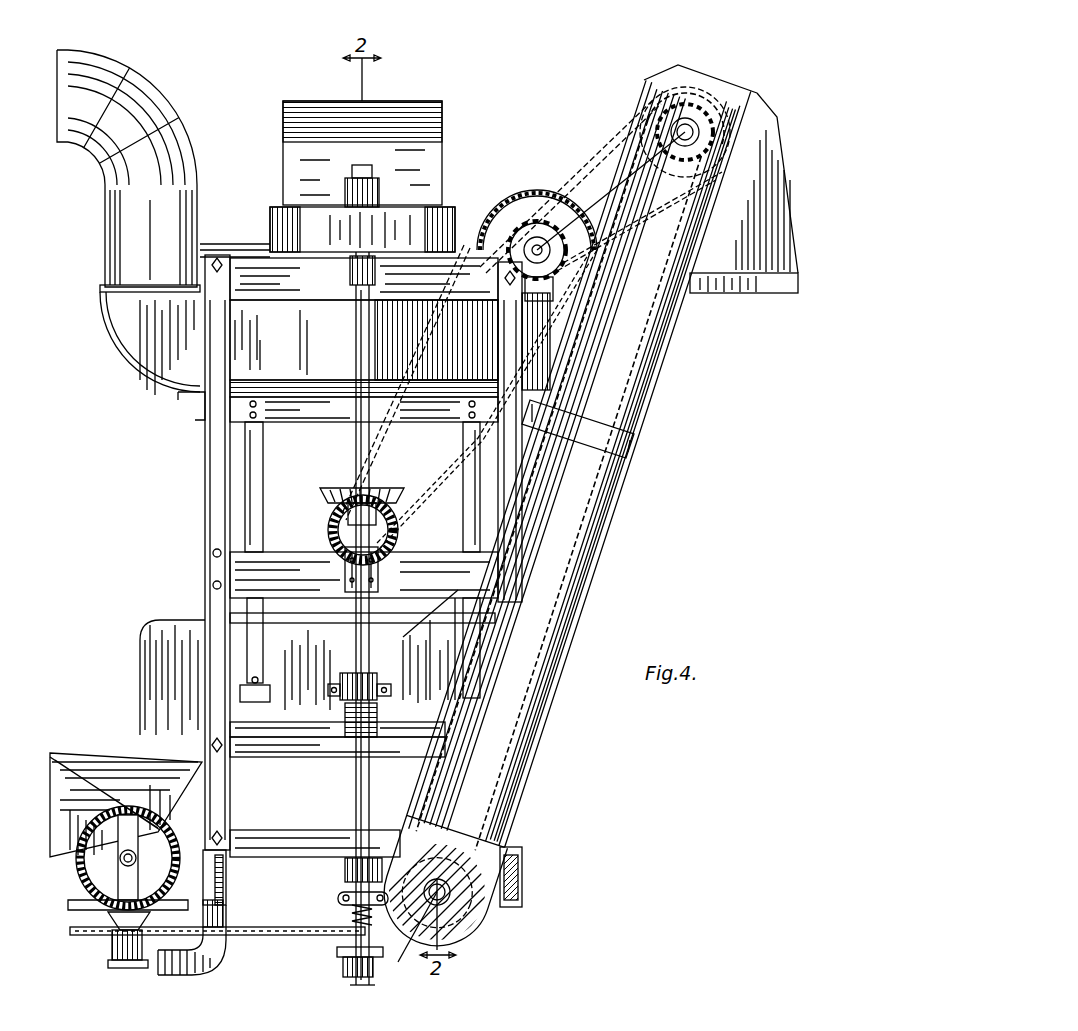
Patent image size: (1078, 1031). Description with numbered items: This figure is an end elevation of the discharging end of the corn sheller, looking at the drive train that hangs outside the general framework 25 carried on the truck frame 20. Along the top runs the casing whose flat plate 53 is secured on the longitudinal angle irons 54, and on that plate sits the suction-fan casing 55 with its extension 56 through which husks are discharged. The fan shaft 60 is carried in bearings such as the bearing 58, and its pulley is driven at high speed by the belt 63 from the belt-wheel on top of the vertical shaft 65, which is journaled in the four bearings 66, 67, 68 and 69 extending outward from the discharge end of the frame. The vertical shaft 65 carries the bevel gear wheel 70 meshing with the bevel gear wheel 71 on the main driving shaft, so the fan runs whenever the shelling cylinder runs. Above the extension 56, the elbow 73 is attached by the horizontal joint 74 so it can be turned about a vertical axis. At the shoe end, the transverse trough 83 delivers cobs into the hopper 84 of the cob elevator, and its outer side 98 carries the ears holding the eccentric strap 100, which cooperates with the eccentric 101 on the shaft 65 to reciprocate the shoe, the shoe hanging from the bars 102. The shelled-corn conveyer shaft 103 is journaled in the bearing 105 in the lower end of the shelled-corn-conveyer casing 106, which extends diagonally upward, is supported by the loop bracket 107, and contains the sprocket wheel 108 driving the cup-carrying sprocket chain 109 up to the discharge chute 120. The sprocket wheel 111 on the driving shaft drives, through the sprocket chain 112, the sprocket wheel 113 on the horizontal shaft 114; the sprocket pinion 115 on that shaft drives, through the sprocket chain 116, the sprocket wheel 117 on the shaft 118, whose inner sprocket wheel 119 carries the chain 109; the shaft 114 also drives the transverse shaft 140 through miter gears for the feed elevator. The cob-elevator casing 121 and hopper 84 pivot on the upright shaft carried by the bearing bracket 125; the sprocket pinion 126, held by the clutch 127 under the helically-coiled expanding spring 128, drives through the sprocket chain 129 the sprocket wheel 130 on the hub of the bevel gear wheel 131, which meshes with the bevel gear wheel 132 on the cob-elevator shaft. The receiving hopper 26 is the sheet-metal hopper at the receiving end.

The truck frame 20 is at (225, 895).
The general framework 25 is at (205, 482).
The receiving hopper 26 is at (431, 160).
The flat plate 53 is at (306, 420).
The longitudinal angle irons 54 is at (186, 405).
The suction-fan casing 55 is at (283, 305).
The extension 56 is at (140, 350).
The bearing 58 is at (379, 192).
The shaft 60 is at (352, 168).
The belt 63 is at (272, 210).
The vertical shaft 65 is at (370, 652).
The bearing 66 is at (377, 270).
The bearing 67 is at (378, 575).
The bearing 68 is at (378, 718).
The bearing 69 is at (345, 868).
The bevel gear wheel 70 is at (390, 482).
The bevel gear wheel 71 is at (395, 512).
The elbow 73 is at (175, 145).
The horizontal joint 74 is at (100, 288).
The transverse trough 83 is at (158, 698).
The hopper 84 is at (108, 765).
The outer side 98 is at (430, 640).
The eccentric strap 100 is at (380, 680).
The eccentric 101 is at (340, 680).
The bars 102 is at (263, 520).
The shaft 103 is at (407, 938).
The bearing 105 is at (470, 915).
The shelled-corn-conveyer casing 106 is at (570, 600).
The loop bracket 107 is at (640, 446).
The sprocket wheel 108 is at (462, 925).
The sprocket chain 109 is at (523, 782).
The sprocket wheel 111 is at (335, 531).
The sprocket chain 112 is at (418, 355).
The sprocket wheel 113 is at (515, 210).
The horizontal shaft 114 is at (578, 230).
The sprocket pinion 115 is at (540, 222).
The sprocket chain 116 is at (598, 150).
The sprocket wheel 117 is at (645, 108).
The shaft 118 is at (682, 125).
The sprocket wheel 119 is at (722, 82).
The discharge chute 120 is at (756, 294).
The cob-elevator casing 121 is at (65, 762).
The bearing bracket 125 is at (180, 975).
The sprocket pinion 126 is at (350, 912).
The clutch 127 is at (337, 950).
The helically-coiled expanding spring 128 is at (338, 898).
The sprocket chain 129 is at (252, 922).
The sprocket wheel 130 is at (95, 940).
The bevel gear wheel 131 is at (75, 910).
The bevel gear wheel 132 is at (160, 830).
The transverse shaft 140 is at (230, 244).